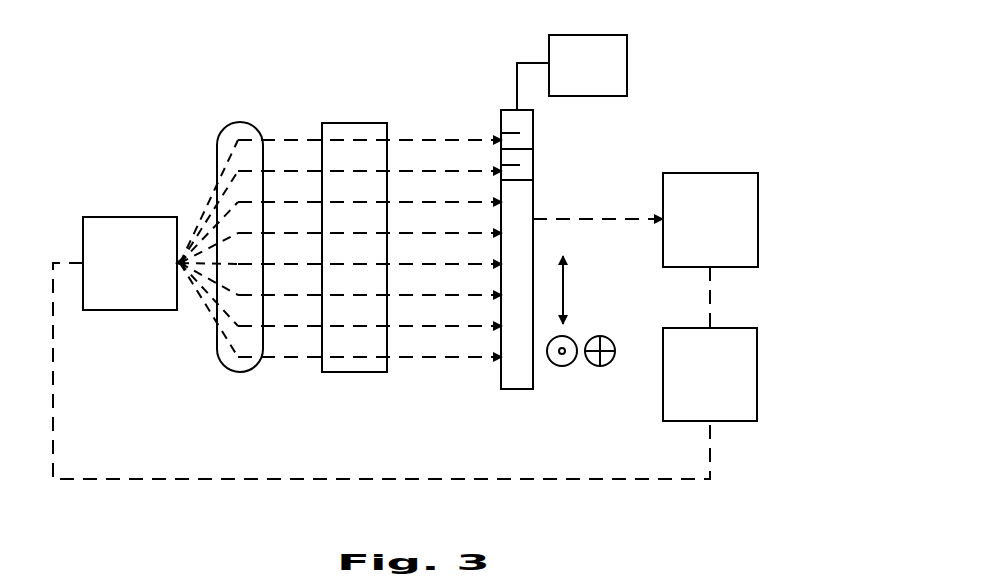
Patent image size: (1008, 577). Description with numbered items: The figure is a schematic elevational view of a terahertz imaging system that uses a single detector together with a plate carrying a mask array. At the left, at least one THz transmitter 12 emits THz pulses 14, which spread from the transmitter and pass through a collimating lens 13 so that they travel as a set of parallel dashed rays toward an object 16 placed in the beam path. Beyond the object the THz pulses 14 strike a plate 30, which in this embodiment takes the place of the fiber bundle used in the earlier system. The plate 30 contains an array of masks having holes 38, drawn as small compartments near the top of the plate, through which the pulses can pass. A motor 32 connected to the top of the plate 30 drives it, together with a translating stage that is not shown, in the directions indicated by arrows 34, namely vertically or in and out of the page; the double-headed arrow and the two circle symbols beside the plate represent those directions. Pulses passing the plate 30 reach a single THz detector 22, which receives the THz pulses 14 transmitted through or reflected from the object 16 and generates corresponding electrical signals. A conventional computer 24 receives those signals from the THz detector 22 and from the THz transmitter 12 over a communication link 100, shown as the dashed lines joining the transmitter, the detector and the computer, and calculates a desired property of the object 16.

The THz transmitter 12 is at (122, 217).
The collimating lens 13 is at (240, 124).
The THz pulses 14 is at (276, 360).
The object 16 is at (352, 372).
The THz detector 22 is at (700, 173).
The computer 24 is at (725, 421).
The plate 30 is at (518, 394).
The motor 32 is at (627, 63).
The arrows 34 is at (565, 297).
The holes 38 is at (515, 143).
The communication link 100 is at (105, 478).